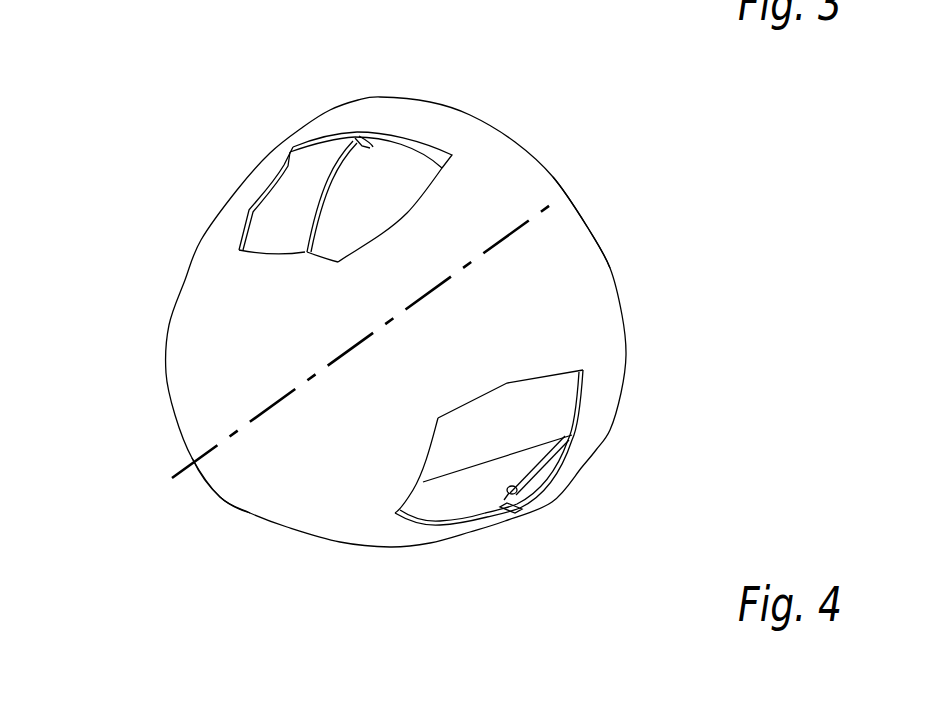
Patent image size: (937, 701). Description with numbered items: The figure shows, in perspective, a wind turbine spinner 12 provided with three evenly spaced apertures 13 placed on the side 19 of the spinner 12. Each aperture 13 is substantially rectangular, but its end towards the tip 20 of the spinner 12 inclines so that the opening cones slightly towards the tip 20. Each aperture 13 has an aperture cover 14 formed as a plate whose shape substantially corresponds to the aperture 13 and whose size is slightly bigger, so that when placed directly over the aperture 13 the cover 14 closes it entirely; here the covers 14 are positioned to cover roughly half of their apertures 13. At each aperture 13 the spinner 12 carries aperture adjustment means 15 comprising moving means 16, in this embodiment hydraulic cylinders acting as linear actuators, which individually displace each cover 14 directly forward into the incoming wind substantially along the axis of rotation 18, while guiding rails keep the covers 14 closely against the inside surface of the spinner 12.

The wind turbine spinner 12 is at (172, 230).
The aperture 13 is at (380, 178).
The aperture cover 14 is at (295, 185).
The aperture adjustment means 15 is at (535, 462).
The moving means 16 is at (510, 503).
The axis of rotation 18 is at (523, 220).
The side 19 is at (530, 270).
The tip 20 is at (233, 452).